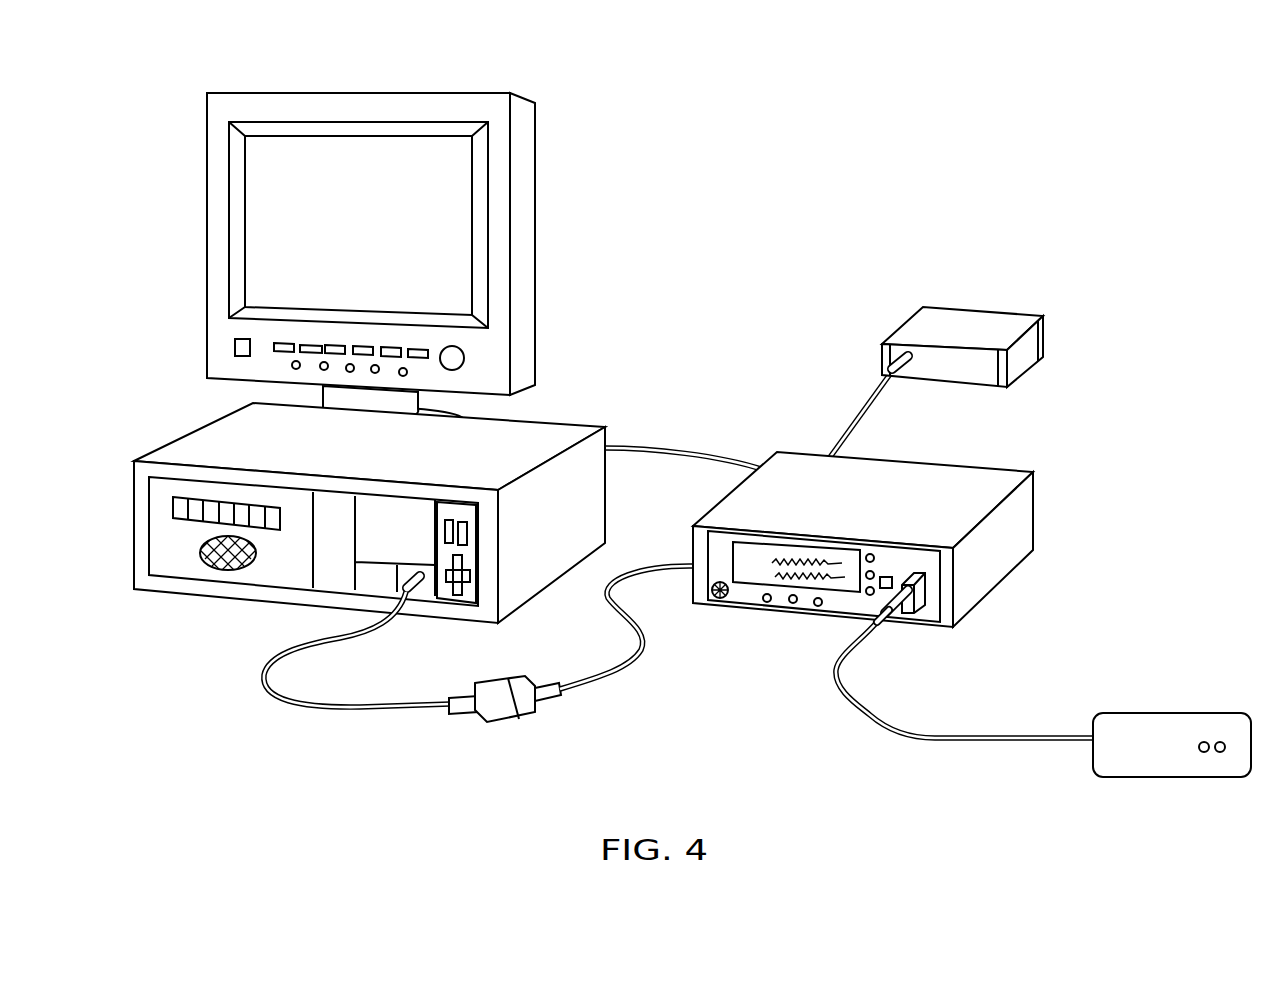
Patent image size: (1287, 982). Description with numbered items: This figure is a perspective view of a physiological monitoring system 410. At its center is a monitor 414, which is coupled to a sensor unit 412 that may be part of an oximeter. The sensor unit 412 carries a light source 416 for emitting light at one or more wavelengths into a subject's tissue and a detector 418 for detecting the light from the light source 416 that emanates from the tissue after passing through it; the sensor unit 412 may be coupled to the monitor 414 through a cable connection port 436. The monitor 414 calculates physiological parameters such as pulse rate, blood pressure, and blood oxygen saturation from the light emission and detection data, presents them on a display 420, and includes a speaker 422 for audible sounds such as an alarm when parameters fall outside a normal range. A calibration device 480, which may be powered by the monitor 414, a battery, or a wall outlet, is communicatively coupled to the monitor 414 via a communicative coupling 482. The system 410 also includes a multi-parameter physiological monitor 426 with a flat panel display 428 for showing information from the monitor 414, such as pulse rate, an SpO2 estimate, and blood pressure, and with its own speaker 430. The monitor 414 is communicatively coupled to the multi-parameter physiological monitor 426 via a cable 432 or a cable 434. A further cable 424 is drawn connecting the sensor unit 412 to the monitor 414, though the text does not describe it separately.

The physiological monitoring system 410 is at (1006, 141).
The sensor unit 412 is at (1206, 695).
The monitor 414 is at (908, 460).
The light source 416 is at (1204, 753).
The detector 418 is at (1222, 753).
The display 420 is at (757, 588).
The speaker 422 is at (718, 602).
The sensor cable 424 is at (848, 702).
The multi-parameter physiological monitor 426 is at (556, 155).
The display 428 is at (268, 254).
The speaker 430 is at (223, 574).
The cable 432 is at (592, 680).
The cable 434 is at (648, 445).
The cable connection port 436 is at (910, 620).
The calibration device 480 is at (1000, 310).
The communicative coupling 482 is at (860, 413).